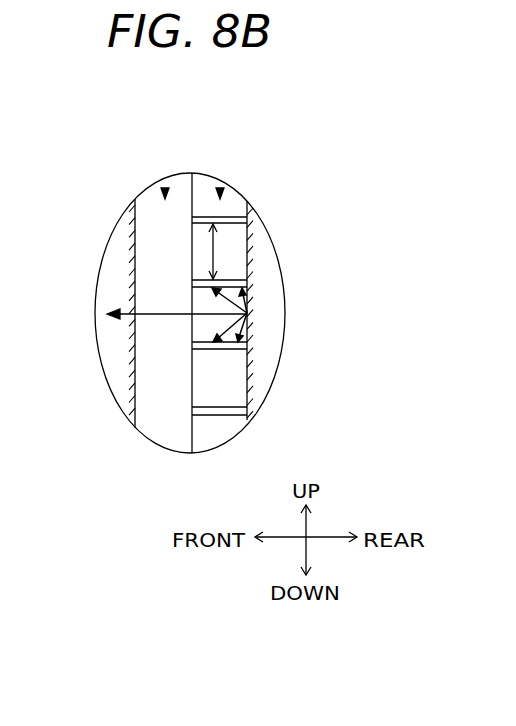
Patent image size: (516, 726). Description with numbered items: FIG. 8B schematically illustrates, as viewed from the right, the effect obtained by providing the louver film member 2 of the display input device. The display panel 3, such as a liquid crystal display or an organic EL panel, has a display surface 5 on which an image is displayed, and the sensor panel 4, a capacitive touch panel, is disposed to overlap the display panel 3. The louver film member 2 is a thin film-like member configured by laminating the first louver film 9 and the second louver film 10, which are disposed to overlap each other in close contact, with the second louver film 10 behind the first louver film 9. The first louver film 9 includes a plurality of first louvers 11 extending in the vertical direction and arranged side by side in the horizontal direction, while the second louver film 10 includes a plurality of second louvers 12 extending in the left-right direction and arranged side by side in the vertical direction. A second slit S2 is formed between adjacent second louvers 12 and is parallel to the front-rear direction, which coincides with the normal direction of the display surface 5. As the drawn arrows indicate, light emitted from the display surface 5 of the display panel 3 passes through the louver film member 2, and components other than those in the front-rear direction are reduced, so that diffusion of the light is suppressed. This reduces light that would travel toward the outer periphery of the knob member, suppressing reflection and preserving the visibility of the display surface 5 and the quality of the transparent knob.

The louver film member 2 is at (167, 108).
The display panel 3 is at (273, 288).
The sensor panel 4 is at (120, 275).
The display surface 5 is at (190, 435).
The first louver film 9 is at (165, 190).
The second louver film 10 is at (220, 190).
The first louver 11 is at (153, 380).
The second louver 12 is at (220, 412).
The second slit S2 is at (226, 251).